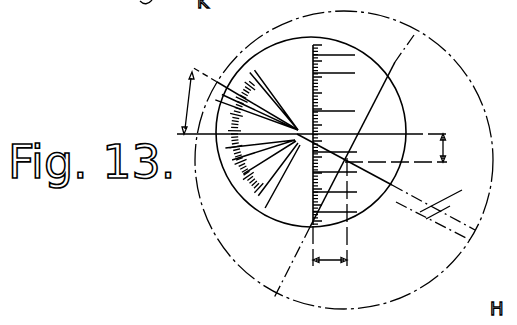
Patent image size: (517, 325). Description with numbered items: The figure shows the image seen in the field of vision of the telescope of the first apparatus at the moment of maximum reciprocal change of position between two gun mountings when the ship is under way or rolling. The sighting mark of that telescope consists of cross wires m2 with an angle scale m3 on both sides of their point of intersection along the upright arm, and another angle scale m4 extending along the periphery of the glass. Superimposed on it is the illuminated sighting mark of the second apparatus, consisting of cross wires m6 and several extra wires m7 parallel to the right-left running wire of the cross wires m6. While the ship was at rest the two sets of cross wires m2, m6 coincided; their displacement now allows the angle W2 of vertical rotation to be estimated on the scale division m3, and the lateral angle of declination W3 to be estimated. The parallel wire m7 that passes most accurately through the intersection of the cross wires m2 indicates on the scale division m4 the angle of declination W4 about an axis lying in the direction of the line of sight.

The cross wires m2 is at (316, 55).
The angle scale m3 is at (316, 86).
The angle scale m4 is at (257, 180).
The cross wires m6 is at (386, 88).
The extra wires m7 is at (263, 107).
The angle W2 is at (446, 146).
The angle of declination W3 is at (330, 264).
The angle of declination W4 is at (187, 101).